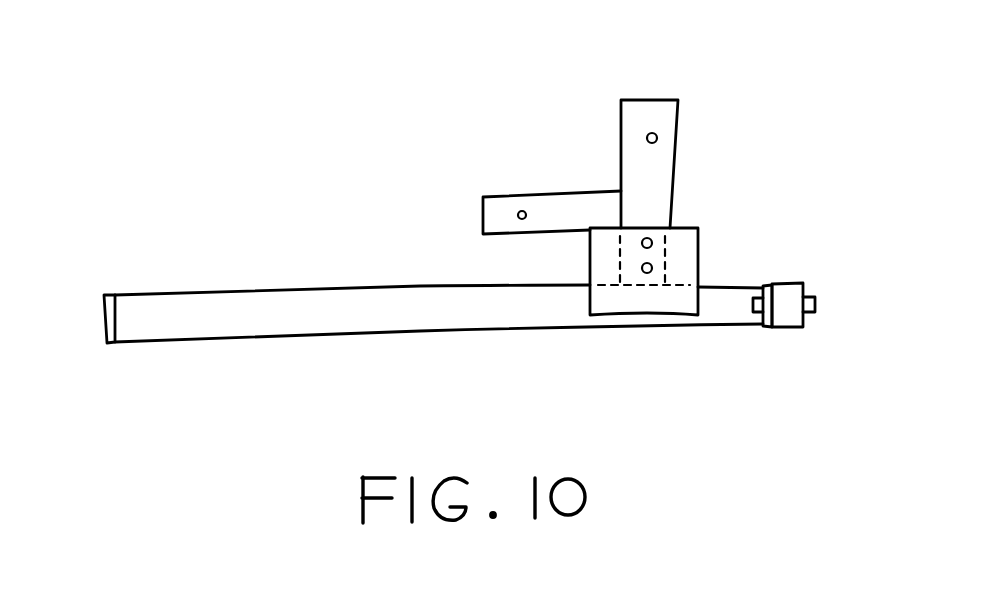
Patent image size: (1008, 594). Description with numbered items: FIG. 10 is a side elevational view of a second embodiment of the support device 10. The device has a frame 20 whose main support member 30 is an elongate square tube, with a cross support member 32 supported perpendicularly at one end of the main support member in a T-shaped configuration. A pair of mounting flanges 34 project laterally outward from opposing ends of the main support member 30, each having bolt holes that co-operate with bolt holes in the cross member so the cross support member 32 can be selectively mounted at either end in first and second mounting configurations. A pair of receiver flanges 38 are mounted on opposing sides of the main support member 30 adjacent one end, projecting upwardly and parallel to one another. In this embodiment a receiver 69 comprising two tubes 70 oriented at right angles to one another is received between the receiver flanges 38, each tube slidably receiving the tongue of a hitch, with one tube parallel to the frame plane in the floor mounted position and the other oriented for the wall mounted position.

The kit assembly 10 is at (290, 98).
The frame 20 is at (315, 292).
The main support member 30 is at (428, 318).
The cross support member 32 is at (792, 297).
The mounting flanges 34 is at (108, 322).
The receiver flanges 38 is at (700, 228).
The receiver 69 is at (571, 141).
The tubes 70 is at (532, 200).